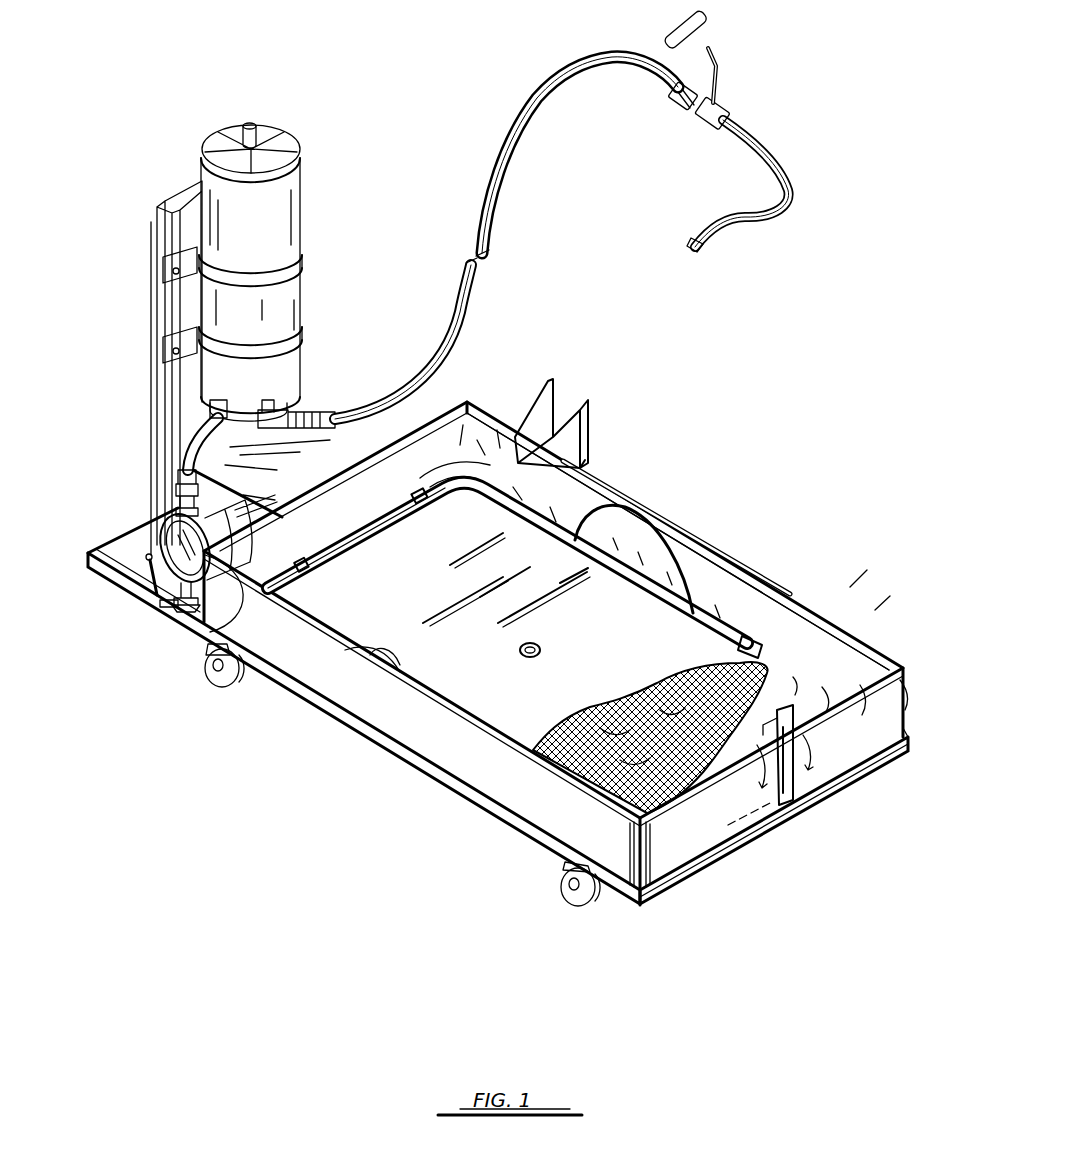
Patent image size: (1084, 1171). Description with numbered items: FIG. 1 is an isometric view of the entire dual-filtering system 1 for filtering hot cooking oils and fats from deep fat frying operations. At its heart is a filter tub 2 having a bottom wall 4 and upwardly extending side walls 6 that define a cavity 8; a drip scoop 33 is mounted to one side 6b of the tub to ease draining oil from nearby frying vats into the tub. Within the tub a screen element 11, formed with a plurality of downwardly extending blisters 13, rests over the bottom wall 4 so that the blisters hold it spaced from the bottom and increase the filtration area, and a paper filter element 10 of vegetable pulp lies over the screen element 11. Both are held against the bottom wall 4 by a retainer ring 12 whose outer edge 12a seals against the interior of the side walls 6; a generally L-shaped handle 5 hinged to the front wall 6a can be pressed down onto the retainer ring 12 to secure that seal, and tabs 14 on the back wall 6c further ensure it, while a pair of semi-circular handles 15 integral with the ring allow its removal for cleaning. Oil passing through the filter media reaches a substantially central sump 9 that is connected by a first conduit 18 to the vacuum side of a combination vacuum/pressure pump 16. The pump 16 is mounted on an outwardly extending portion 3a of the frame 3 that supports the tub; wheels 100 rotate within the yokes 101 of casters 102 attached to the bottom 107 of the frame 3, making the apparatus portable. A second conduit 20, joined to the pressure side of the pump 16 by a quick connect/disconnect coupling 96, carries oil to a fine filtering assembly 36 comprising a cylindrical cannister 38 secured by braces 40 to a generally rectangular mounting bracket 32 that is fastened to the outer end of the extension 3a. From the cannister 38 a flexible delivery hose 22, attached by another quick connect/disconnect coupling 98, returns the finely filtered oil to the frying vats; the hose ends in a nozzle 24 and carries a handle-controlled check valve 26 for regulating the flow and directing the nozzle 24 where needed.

The dual-filtering system 1 is at (703, 427).
The filter tub 2 is at (720, 553).
The frame 3 is at (687, 873).
The outwardly extending portion of frame 3a is at (113, 565).
The bottom wall 4 is at (337, 543).
The L-shaped handle 5 is at (807, 727).
The side walls 6 is at (453, 743).
The front wall 6a is at (720, 790).
The side of filter tub 6b is at (613, 487).
The back wall 6c is at (247, 583).
The cavity 8 is at (577, 468).
The central drain 9 is at (520, 650).
The paper filter element 10 is at (380, 738).
The screen element 11 is at (580, 718).
The retainer ring 12 is at (383, 532).
The outer edge of retainer ring 12a is at (762, 643).
The blisters 13 is at (660, 697).
The tabs 14 is at (420, 497).
The semi-circular handles 15 is at (657, 537).
The combination vacuum/pressure pump 16 is at (147, 517).
The first conduit 18 is at (148, 610).
The second conduit 20 is at (193, 435).
The flexible delivery hose 22 is at (477, 300).
The nozzle 24 is at (700, 247).
The handle-controlled check valve 26 is at (720, 110).
The mounting bracket 32 is at (157, 207).
The drip scoop 33 is at (562, 410).
The fine filtering assembly 36 is at (303, 203).
The cannister 38 is at (303, 163).
The braces 40 is at (290, 273).
The quick connect/disconnect coupling 96 is at (180, 483).
The quick connect/disconnect coupling 98 is at (280, 430).
The wheels 100 is at (240, 690).
The yokes 101 is at (215, 680).
The casters 102 is at (202, 667).
The bottom of frame 107 is at (360, 720).